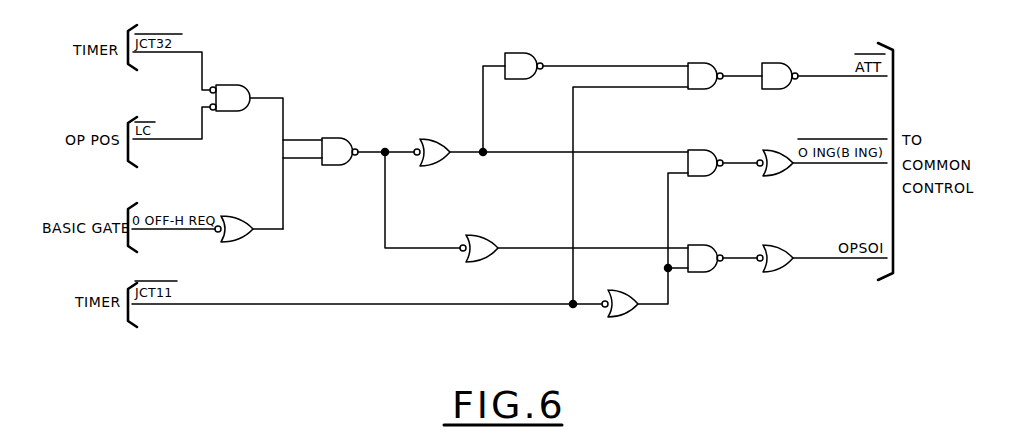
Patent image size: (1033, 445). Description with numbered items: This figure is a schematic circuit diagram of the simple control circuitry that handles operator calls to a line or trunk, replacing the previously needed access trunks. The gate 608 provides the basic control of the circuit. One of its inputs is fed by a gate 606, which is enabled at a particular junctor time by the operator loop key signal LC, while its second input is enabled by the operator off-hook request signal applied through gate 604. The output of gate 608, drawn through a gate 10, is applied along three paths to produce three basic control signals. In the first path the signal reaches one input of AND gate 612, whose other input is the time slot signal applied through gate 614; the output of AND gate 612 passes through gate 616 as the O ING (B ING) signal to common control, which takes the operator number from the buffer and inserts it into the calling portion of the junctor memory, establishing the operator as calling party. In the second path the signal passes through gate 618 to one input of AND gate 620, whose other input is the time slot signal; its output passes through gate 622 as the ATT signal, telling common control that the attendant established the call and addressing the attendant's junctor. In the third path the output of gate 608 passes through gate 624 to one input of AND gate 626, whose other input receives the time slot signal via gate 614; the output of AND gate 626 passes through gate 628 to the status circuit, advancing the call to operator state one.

The NOR gate 10 is at (443, 138).
The gate 604 is at (237, 214).
The gate 606 is at (237, 83).
The gate 608 is at (330, 137).
The AND gate 612 is at (697, 149).
The gate 614 is at (615, 318).
The gate 616 is at (768, 150).
The gate 618 is at (518, 52).
The AND gate 620 is at (693, 62).
The gate 622 is at (775, 62).
The gate 624 is at (473, 235).
The AND gate 626 is at (693, 244).
The gate 628 is at (768, 245).